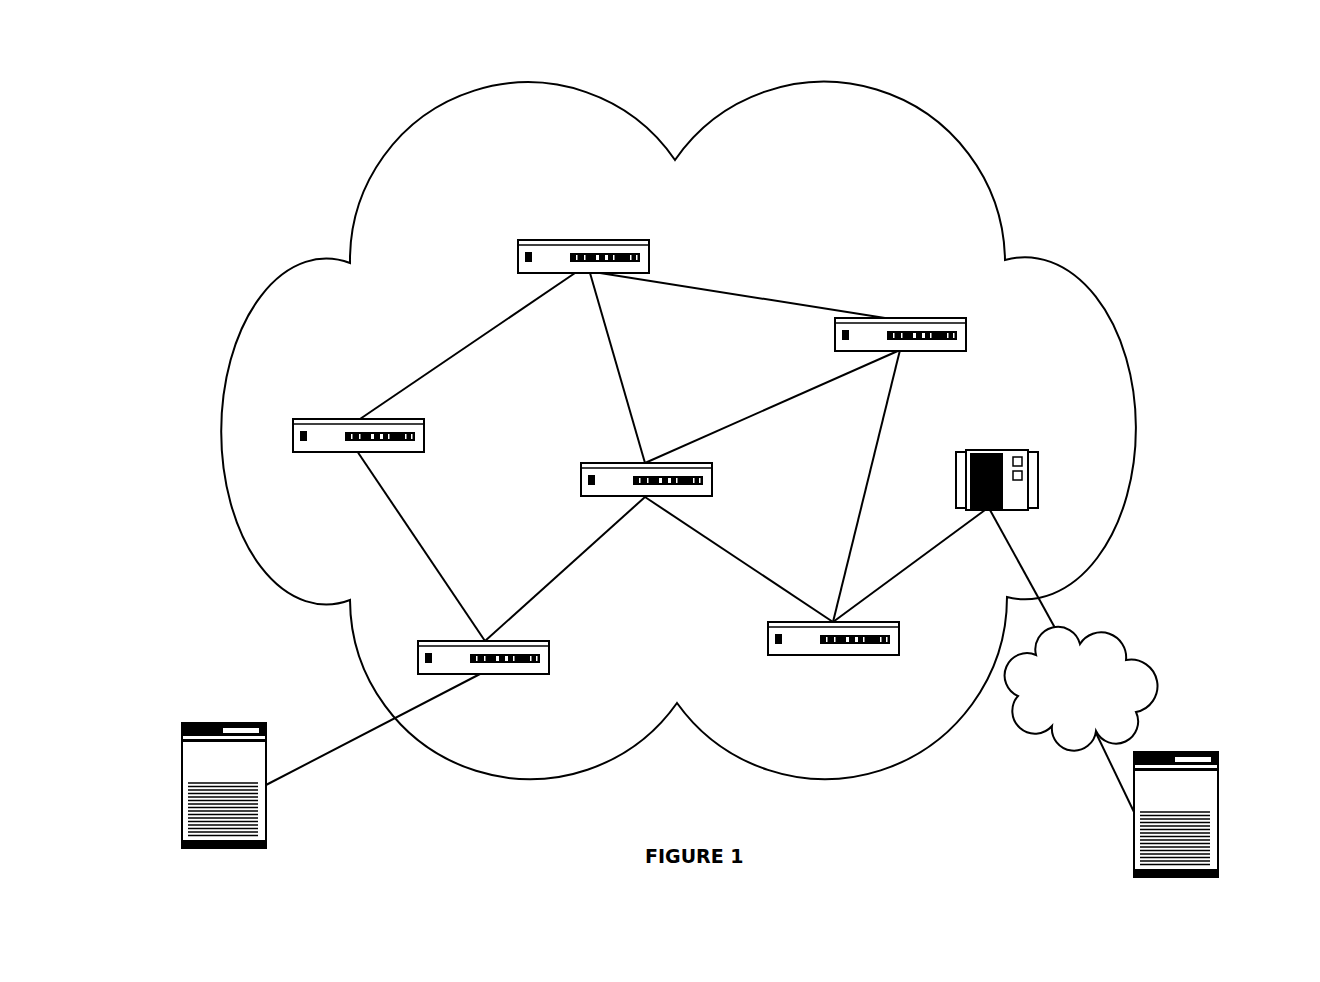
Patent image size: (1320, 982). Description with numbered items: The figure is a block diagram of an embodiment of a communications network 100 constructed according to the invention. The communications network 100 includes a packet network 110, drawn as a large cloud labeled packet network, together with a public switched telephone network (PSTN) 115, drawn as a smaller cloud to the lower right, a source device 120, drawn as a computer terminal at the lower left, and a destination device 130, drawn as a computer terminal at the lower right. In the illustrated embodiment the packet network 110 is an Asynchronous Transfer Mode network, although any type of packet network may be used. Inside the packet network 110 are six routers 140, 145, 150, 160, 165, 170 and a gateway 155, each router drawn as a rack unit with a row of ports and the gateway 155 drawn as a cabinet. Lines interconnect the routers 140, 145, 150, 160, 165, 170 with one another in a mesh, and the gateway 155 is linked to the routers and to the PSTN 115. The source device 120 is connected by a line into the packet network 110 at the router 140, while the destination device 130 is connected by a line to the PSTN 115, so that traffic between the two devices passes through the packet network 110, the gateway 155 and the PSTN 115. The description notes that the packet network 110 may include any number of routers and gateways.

The communications network 100 is at (1098, 81).
The packet network 110 is at (830, 82).
The public switched telephone network (PSTN) 115 is at (1104, 637).
The source device 120 is at (262, 723).
The destination device 130 is at (1215, 752).
The router 140 is at (536, 641).
The router 145 is at (700, 463).
The router 150 is at (888, 622).
The gateway 155 is at (1030, 450).
The router 160 is at (413, 419).
The router 165 is at (637, 240).
The router 170 is at (955, 318).